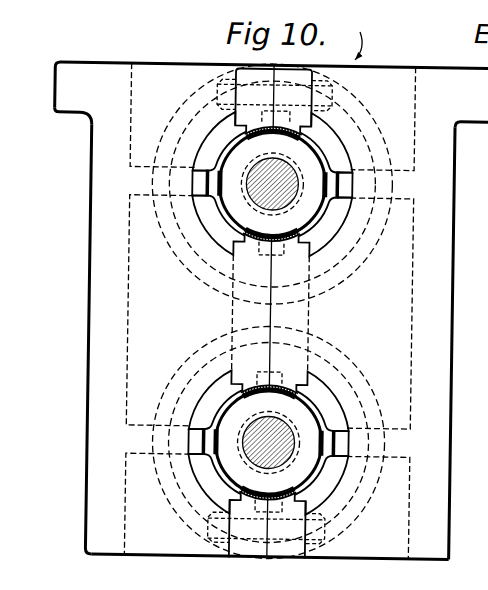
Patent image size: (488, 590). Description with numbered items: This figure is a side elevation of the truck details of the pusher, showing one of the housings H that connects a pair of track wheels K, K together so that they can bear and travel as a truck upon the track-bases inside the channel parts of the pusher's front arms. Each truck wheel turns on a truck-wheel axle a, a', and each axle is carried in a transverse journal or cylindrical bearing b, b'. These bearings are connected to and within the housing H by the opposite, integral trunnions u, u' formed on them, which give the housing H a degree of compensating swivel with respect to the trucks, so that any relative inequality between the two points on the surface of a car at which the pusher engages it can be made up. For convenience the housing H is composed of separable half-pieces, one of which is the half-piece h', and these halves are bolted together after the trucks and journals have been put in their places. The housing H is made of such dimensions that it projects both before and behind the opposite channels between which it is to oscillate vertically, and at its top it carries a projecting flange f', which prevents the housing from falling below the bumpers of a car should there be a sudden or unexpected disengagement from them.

The projecting flange f' is at (270, 143).
The truck-wheel axle a is at (232, 172).
The truck-wheel axle a' is at (228, 432).
The transverse journal b is at (254, 184).
The transverse journal b' is at (250, 442).
The housing H is at (268, 311).
The track wheel K is at (226, 297).
The trunnion u is at (270, 320).
The trunnion u' is at (270, 329).
The separable half-piece h' is at (179, 572).